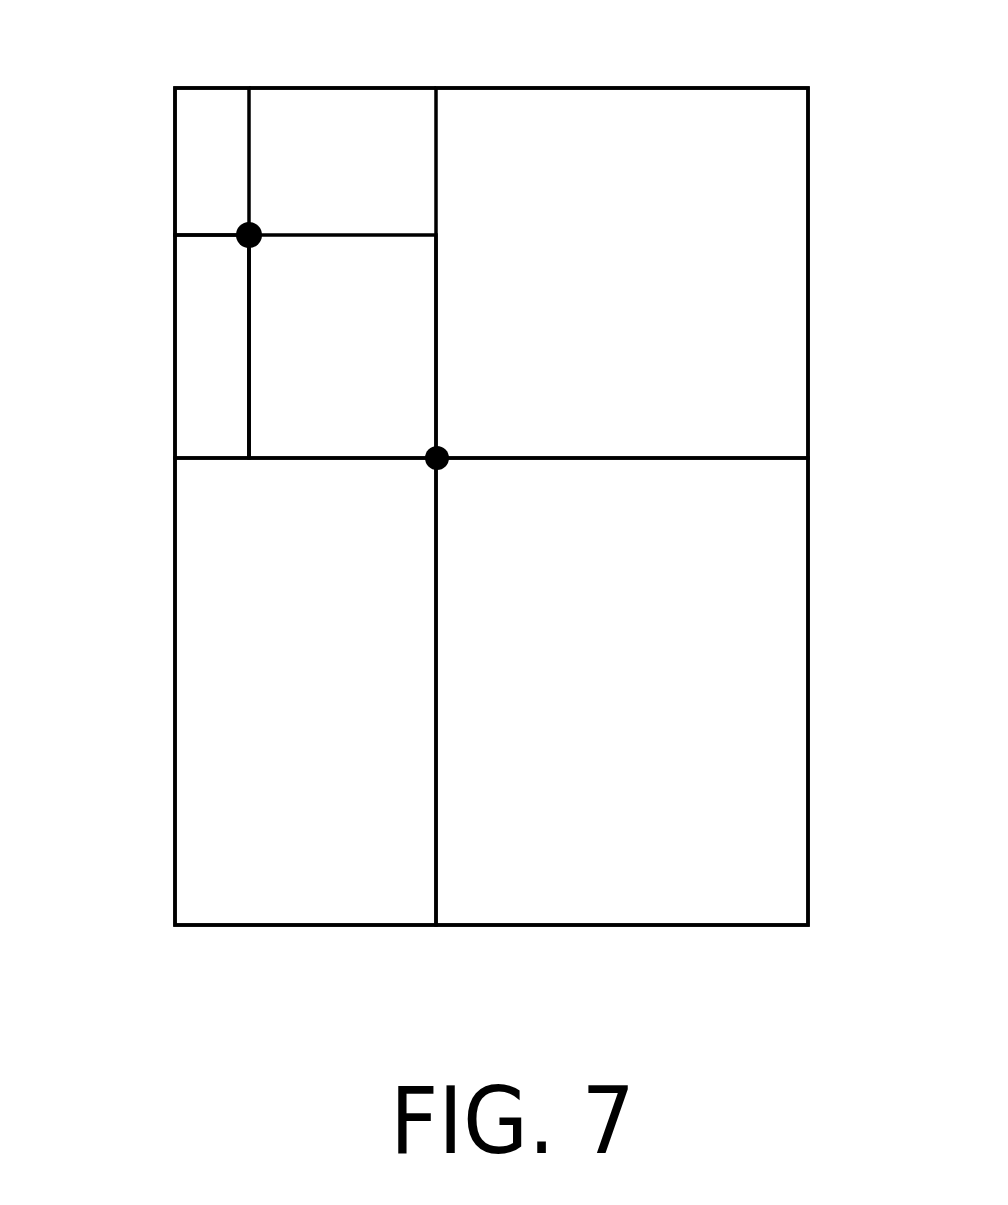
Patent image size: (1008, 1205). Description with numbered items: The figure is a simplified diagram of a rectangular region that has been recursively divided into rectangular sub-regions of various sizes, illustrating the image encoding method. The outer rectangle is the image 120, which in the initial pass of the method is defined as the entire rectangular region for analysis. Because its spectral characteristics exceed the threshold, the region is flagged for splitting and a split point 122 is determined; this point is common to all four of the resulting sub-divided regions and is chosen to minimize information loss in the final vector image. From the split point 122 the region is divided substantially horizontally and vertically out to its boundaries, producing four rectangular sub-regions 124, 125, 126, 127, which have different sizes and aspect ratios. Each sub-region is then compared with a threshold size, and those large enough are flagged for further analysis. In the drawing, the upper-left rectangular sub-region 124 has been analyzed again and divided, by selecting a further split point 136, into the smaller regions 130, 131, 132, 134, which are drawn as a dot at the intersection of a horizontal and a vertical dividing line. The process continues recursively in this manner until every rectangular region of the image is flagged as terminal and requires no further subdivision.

The image 120 is at (810, 122).
The split point 122 is at (487, 432).
The rectangular sub-region 124 is at (360, 331).
The rectangular sub-region 125 is at (636, 285).
The rectangular sub-region 126 is at (350, 700).
The rectangular sub-region 127 is at (650, 700).
The region 130 is at (193, 182).
The region 131 is at (287, 98).
The region 132 is at (192, 357).
The region 134 is at (287, 385).
The split point 136 is at (251, 225).